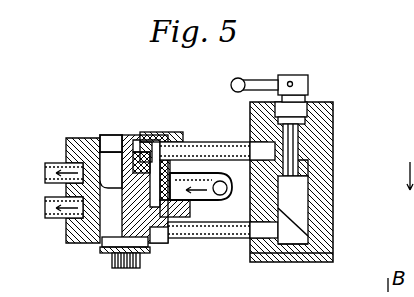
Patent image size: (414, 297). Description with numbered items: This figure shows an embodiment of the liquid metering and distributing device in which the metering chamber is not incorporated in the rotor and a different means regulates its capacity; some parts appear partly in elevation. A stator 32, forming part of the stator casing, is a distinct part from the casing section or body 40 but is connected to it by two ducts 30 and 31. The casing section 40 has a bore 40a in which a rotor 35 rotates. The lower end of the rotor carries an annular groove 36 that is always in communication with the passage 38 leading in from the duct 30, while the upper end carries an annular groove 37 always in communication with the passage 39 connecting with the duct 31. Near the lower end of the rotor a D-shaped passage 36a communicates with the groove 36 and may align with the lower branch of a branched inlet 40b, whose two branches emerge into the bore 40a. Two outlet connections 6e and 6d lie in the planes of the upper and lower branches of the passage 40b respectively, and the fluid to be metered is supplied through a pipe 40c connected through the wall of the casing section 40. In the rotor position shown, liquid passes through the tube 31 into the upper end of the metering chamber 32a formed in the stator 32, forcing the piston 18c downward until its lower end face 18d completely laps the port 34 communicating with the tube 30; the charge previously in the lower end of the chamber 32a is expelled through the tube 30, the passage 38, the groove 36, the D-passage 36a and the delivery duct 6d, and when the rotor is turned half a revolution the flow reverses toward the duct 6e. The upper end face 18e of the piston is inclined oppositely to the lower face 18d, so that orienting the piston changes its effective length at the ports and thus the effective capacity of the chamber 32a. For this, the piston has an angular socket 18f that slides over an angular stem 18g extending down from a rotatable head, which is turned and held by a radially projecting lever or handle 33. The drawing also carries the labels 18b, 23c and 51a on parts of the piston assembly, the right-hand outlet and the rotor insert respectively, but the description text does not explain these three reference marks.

The outlet connection 6d is at (48, 216).
The outlet connection 6e is at (48, 164).
The valve stem knob 18b is at (293, 75).
The piston 18c is at (307, 180).
The lower end face of the piston 18d is at (307, 217).
The upper end face of the piston 18e is at (300, 140).
The angular socket 18f is at (305, 163).
The angular stem 18g is at (318, 117).
The outlet 23c is at (402, 202).
The duct 30 is at (227, 231).
The duct 31 is at (225, 145).
The stator 32 is at (295, 132).
The metering chamber 32a is at (298, 242).
The lever or handle 33 is at (260, 79).
The port 34 is at (274, 247).
The rotor 35 is at (123, 133).
The annular groove 36 is at (112, 253).
The D-shaped passage 36a is at (102, 247).
The annular groove 37 is at (110, 133).
The passage 38 is at (168, 243).
The passage 39 is at (163, 137).
The casing section or body 40 is at (182, 142).
The bore 40a is at (74, 136).
The branched inlet 40b is at (198, 177).
The pipe 40c is at (215, 199).
The valve insert 51a is at (138, 134).